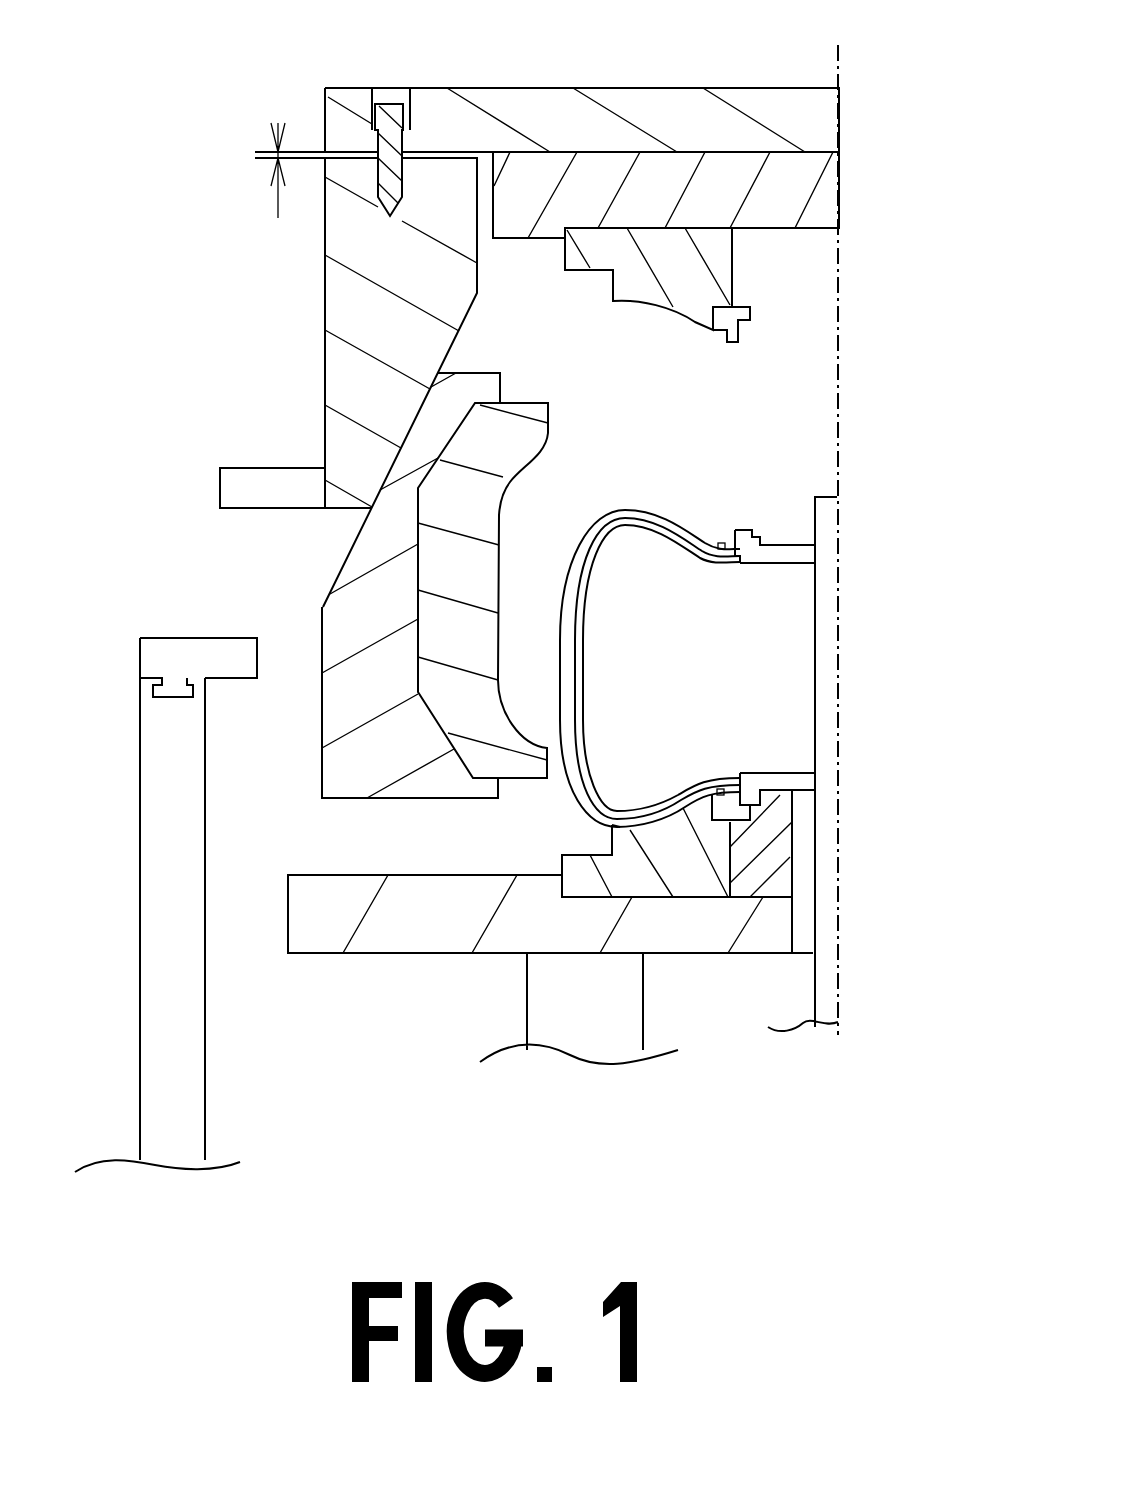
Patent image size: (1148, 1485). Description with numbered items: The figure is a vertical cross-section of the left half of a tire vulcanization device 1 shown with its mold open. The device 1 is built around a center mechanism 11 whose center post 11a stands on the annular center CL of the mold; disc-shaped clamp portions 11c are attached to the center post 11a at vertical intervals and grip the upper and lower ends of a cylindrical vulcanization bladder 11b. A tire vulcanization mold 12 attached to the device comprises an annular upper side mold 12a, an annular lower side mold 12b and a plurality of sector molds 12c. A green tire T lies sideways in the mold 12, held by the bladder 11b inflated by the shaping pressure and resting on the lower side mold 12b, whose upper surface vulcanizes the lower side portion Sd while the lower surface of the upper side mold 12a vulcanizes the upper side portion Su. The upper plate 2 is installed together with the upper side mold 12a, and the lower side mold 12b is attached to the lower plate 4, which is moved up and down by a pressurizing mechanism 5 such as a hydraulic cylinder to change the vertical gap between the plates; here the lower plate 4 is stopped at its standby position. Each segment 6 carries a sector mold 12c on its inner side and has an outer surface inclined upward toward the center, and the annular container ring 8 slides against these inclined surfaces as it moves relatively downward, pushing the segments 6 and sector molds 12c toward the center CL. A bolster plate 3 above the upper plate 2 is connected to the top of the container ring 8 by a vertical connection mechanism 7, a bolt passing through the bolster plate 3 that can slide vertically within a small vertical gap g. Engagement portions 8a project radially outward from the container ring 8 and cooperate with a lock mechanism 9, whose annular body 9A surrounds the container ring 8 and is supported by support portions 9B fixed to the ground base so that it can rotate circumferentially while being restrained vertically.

The tire vulcanization device 1 is at (238, 243).
The upper plate 2 is at (835, 199).
The bolster plate 3 is at (765, 98).
The lower plate 4 is at (373, 945).
The pressurizing mechanism 5 is at (545, 1022).
The segment 6 is at (330, 638).
The vertical connection mechanism 7 is at (416, 113).
The container ring 8 is at (333, 316).
The engagement portion 8a is at (283, 480).
The lock mechanism 9 is at (183, 620).
The annular body 9A is at (233, 648).
The support portion 9B is at (197, 865).
The center mechanism 11 is at (835, 553).
The center post 11a is at (830, 693).
The vulcanization bladder 11b is at (580, 740).
The clamp portion 11c is at (765, 560).
The tire vulcanization mold 12 is at (558, 430).
The upper side mold 12a is at (720, 265).
The lower side mold 12b is at (683, 886).
The sector mold 12c is at (503, 590).
The vertical gap g is at (260, 170).
The green tire T is at (566, 646).
The upper side portion Su is at (625, 510).
The lower side portion Sd is at (615, 825).
The annular center CL is at (836, 562).